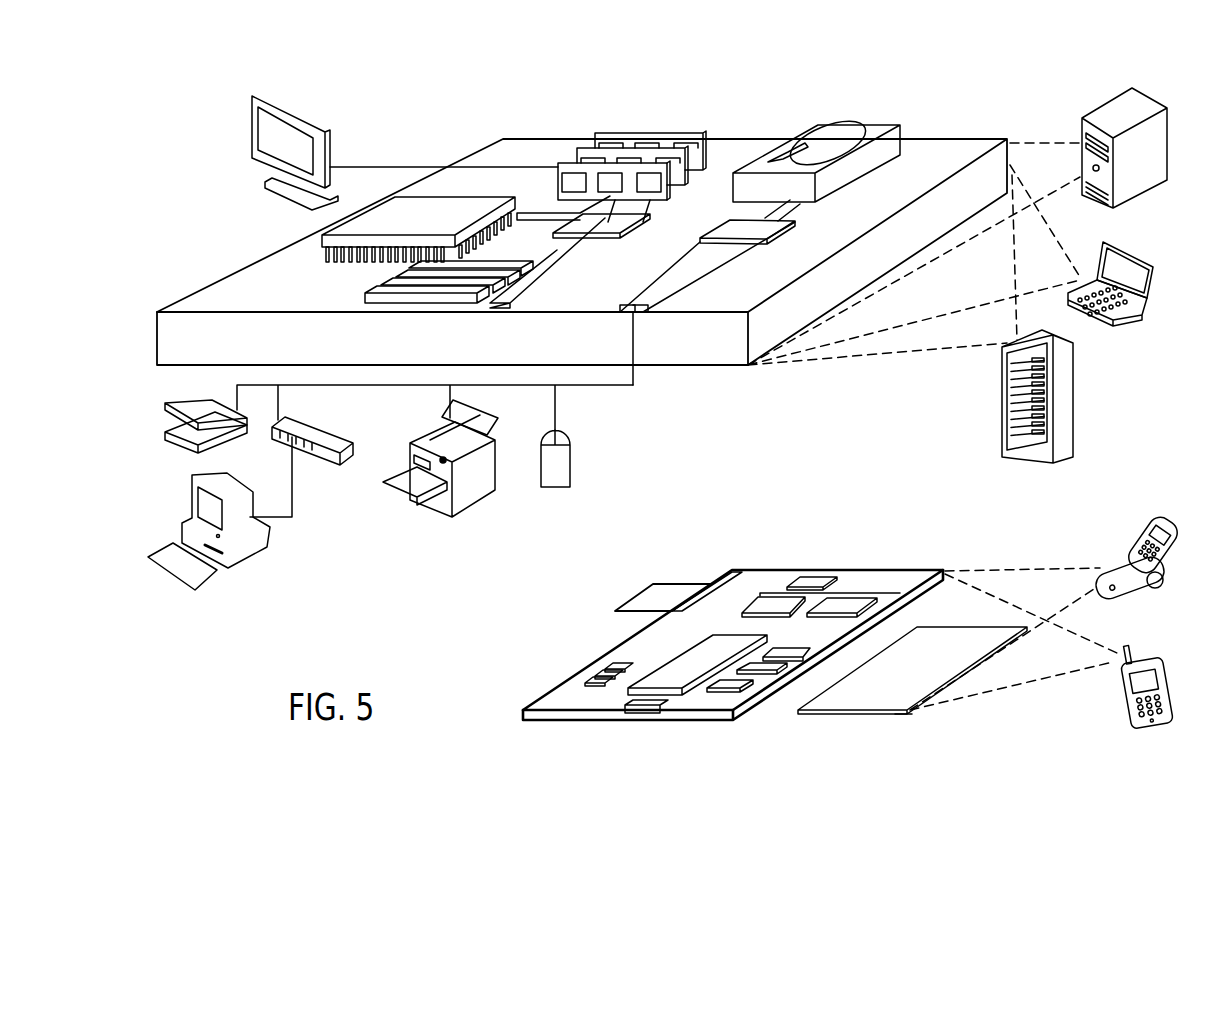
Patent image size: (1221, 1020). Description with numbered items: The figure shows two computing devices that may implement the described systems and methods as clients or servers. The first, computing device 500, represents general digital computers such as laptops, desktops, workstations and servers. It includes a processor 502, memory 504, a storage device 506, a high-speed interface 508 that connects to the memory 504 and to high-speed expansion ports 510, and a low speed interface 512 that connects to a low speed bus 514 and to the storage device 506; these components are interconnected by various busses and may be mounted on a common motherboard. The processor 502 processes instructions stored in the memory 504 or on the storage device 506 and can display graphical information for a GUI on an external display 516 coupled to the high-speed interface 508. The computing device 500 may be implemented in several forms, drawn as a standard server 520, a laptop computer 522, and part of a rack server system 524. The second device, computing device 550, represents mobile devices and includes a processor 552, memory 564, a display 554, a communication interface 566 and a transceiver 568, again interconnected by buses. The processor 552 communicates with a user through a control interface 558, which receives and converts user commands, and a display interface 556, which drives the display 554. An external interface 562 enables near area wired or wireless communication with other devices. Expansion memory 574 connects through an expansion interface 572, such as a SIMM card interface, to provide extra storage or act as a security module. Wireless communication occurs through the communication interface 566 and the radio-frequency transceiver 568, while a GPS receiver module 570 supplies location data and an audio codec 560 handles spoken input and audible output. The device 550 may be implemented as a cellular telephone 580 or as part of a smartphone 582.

The computing device 500 is at (434, 114).
The processor 502 is at (322, 247).
The memory 504 is at (605, 132).
The storage device 506 is at (818, 126).
The high-speed interface 508 is at (580, 227).
The high-speed expansion ports 510 is at (400, 272).
The low speed interface 512 is at (748, 228).
The low speed bus 514 is at (643, 313).
The display 516 is at (248, 96).
The standard server 520 is at (1080, 128).
The laptop computer 522 is at (1103, 242).
The rack server system 524 is at (1002, 422).
The computing device 550 is at (712, 545).
The processor 552 is at (673, 693).
The display 554 is at (910, 708).
The display interface 556 is at (745, 712).
The control interface 558 is at (782, 672).
The audio codec 560 is at (824, 698).
The external interface 562 is at (645, 710).
The memory 564 is at (607, 675).
The communication interface 566 is at (777, 603).
The transceiver 568 is at (845, 603).
The GPS receiver module 570 is at (820, 571).
The expansion interface 572 is at (707, 582).
The expansion memory 574 is at (653, 587).
The cellular telephone 580 is at (1145, 524).
The smartphone 582 is at (1133, 645).